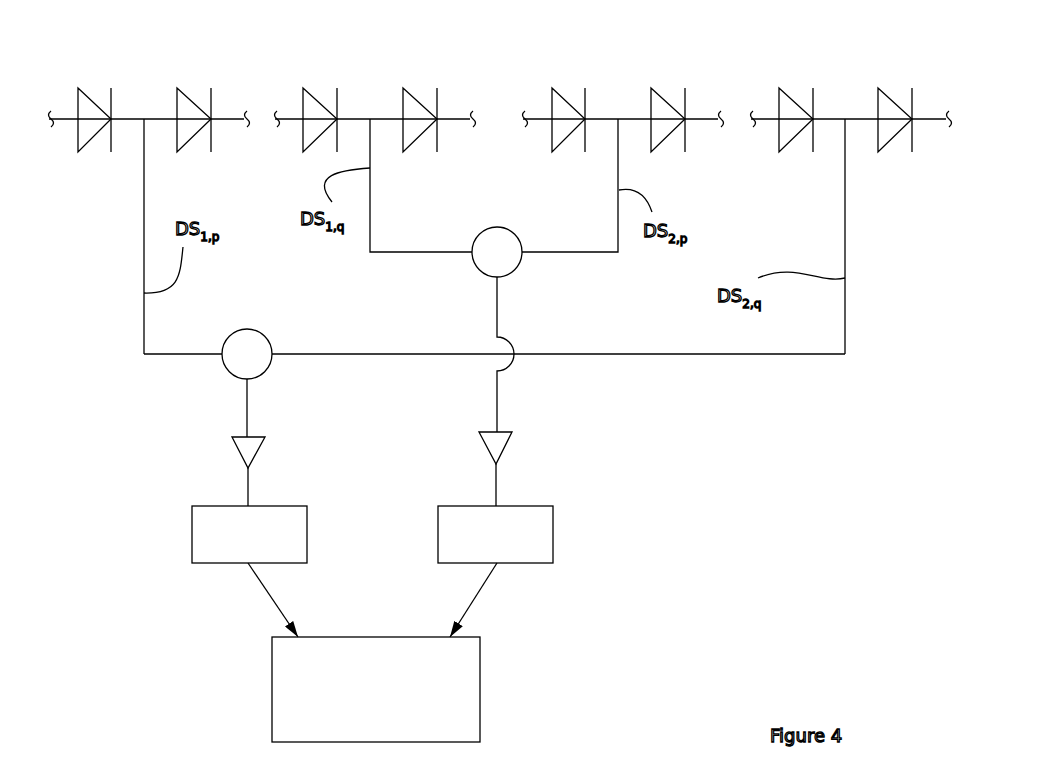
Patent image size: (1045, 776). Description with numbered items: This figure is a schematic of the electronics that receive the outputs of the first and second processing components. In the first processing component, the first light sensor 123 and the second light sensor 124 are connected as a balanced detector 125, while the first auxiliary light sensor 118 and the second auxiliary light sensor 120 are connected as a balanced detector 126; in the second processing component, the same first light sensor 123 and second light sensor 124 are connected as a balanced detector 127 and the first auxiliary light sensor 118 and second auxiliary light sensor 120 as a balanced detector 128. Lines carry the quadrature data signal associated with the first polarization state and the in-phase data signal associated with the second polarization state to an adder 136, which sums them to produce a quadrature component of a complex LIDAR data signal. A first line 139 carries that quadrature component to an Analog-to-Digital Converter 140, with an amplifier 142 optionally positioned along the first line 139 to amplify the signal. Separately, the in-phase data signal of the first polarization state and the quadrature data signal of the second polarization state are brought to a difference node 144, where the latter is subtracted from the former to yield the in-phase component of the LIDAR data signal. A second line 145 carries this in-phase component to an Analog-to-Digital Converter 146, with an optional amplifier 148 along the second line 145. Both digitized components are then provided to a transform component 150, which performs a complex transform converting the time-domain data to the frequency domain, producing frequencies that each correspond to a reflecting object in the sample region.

The first auxiliary light sensor 118 is at (303, 88).
The second auxiliary light sensor 120 is at (403, 88).
The first light sensor 123 is at (78, 88).
The second light sensor 124 is at (178, 88).
The balanced detector 125 is at (136, 72).
The balanced detector 126 is at (372, 85).
The balanced detector 127 is at (610, 70).
The balanced detector 128 is at (846, 85).
The adder 136 is at (475, 230).
The first line 139 is at (496, 392).
The Analog-to-Digital Converter 140 is at (553, 522).
The amplifier 142 is at (507, 443).
The difference node 144 is at (247, 330).
The second line 145 is at (248, 481).
The Analog-to-Digital Converter 146 is at (307, 522).
The amplifier 148 is at (238, 456).
The transform component 150 is at (272, 659).